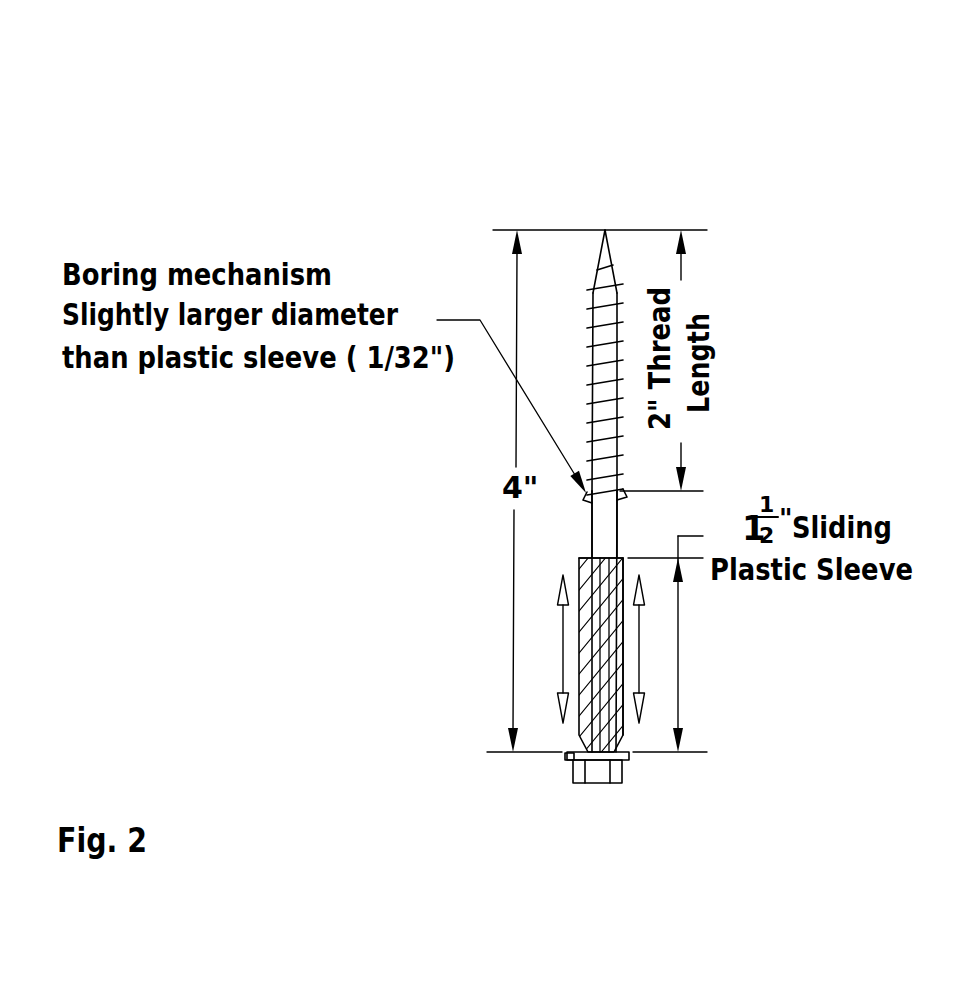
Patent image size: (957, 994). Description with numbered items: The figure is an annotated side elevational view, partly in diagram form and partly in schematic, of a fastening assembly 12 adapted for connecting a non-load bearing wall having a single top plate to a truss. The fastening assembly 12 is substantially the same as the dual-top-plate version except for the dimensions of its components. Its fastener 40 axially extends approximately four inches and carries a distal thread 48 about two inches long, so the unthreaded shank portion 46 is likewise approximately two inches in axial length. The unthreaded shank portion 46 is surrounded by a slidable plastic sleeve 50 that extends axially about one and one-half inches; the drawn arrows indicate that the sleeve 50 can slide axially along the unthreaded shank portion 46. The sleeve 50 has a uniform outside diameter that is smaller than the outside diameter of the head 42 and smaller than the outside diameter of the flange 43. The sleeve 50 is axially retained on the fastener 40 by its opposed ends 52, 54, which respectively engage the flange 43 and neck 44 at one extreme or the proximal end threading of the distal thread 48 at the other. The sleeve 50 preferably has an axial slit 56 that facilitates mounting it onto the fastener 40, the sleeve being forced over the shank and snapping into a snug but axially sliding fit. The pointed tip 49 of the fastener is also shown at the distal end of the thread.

The fastening assembly 12 is at (667, 147).
The fastener 40 is at (587, 533).
The head 42 is at (615, 770).
The flange 43 is at (567, 757).
The neck 44 is at (587, 723).
The unthreaded shank portion 46 is at (603, 532).
The distal thread 48 is at (590, 310).
The boring tip 49 is at (605, 230).
The slidable plastic sleeve 50 is at (622, 640).
The end of sleeve 52 is at (617, 557).
The end of sleeve 54 is at (570, 760).
The axial slit 56 is at (603, 620).